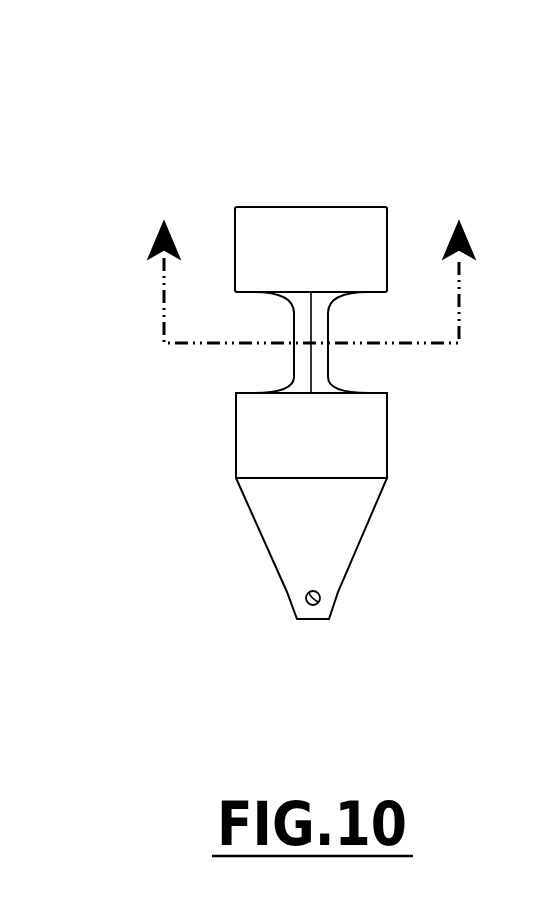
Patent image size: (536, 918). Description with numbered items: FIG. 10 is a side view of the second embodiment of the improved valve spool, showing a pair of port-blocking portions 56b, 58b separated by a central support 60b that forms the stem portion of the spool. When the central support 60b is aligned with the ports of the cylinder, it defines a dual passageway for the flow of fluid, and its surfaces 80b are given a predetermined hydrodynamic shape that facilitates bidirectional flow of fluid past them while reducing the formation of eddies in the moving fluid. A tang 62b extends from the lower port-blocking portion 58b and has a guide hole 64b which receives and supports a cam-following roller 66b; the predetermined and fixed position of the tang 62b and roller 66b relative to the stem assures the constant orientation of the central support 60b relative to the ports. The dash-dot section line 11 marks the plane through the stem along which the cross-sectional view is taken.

The plane 11— 11 is at (313, 280).
The port-blocking portion 56b is at (316, 238).
The port-blocking portion 58b is at (258, 427).
The central support 60b is at (317, 333).
The tang 62b is at (328, 543).
The guide hole 64b is at (325, 598).
The cam-following roller 66b is at (304, 593).
The surfaces of central support 80b is at (303, 358).